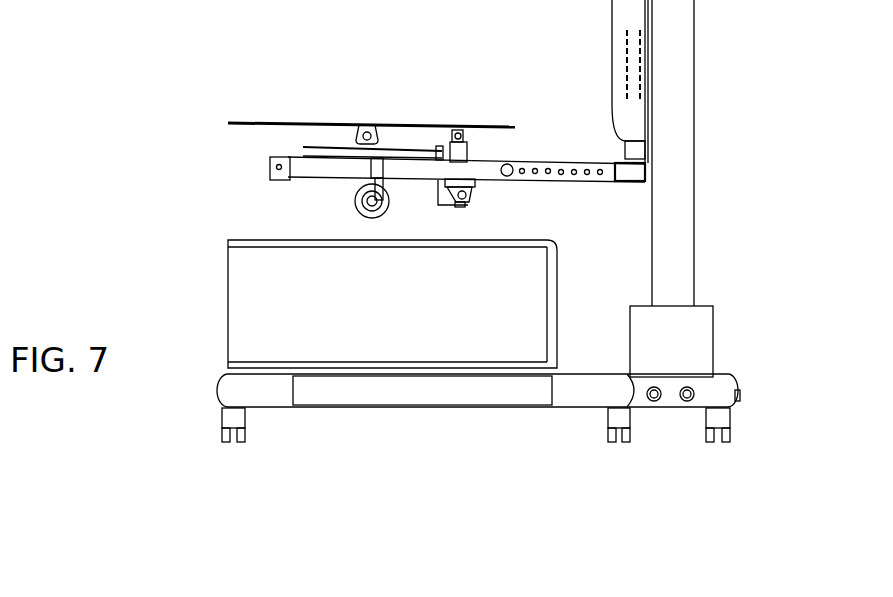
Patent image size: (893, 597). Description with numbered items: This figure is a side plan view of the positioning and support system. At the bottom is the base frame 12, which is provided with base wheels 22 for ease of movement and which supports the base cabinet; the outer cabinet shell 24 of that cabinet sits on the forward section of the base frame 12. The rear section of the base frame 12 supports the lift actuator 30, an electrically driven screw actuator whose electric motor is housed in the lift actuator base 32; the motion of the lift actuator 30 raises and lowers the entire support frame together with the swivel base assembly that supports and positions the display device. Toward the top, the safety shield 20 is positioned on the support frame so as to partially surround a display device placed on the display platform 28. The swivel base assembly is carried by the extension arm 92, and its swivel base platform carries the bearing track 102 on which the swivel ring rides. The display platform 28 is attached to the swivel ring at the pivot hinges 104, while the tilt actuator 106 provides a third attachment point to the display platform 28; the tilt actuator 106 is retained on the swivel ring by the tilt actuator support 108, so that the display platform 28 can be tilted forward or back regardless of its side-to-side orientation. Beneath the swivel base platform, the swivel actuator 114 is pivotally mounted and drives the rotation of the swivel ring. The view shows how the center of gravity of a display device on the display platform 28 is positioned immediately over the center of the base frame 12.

The base frame 12 is at (382, 388).
The safety shield 20 is at (623, 4).
The base wheels 22 is at (233, 420).
The outer cabinet shell 24 is at (378, 321).
The display platform 28 is at (247, 123).
The lift actuator 30 is at (665, 228).
The lift actuator base 32 is at (686, 356).
The extension arm 92 is at (270, 167).
The bearing track 102 is at (303, 150).
The pivot hinges 104 is at (371, 126).
The tilt actuator 106 is at (462, 153).
The tilt actuator support 108 is at (470, 204).
The swivel actuator 114 is at (355, 200).